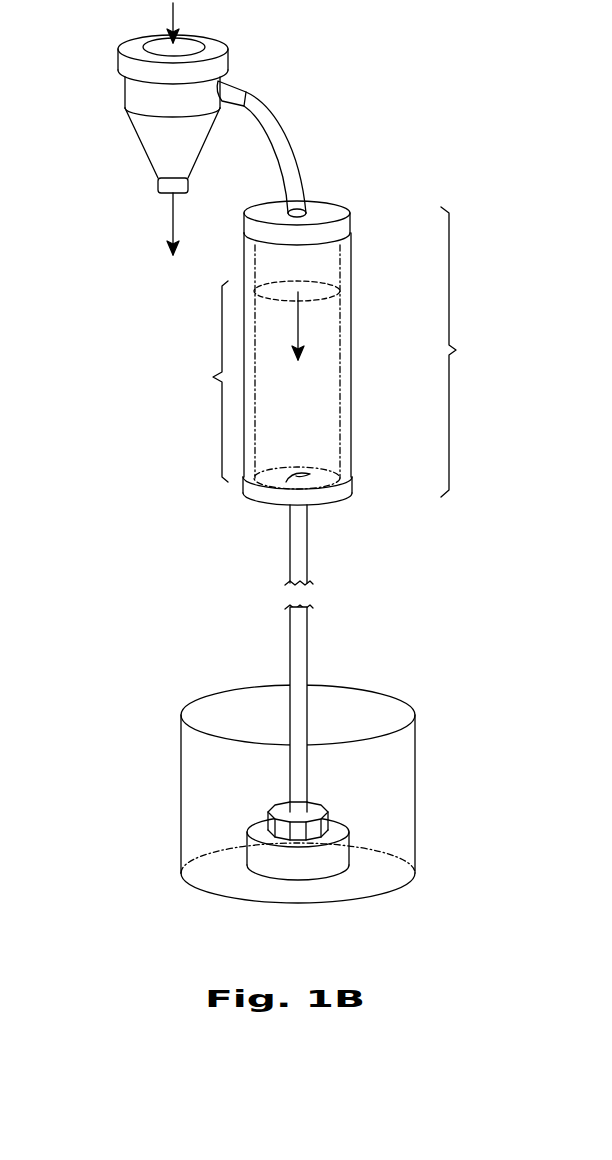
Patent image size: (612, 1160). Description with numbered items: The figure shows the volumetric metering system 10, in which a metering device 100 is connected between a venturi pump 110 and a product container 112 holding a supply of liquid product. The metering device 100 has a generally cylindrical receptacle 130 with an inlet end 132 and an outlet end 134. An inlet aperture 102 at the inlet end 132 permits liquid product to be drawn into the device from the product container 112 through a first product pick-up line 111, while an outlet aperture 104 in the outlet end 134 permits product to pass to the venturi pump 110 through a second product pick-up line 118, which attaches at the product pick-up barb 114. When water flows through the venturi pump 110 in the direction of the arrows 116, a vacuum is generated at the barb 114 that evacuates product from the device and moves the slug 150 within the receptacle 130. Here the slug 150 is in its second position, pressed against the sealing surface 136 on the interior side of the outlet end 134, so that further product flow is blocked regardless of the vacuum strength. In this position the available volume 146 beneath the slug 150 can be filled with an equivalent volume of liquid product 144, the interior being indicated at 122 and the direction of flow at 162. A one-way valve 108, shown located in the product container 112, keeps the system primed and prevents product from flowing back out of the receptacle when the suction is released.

The volumetric metering system 10 is at (408, 76).
The venturi pump 110 is at (143, 96).
The product pick-up barb 114 is at (242, 88).
The arrows indicating water flow direction 116 is at (173, 215).
The second product pick-up line 118 is at (285, 147).
The outlet aperture 104 is at (304, 207).
The outlet end 134 is at (337, 212).
The sealing surface 136 is at (323, 248).
The metering device 100 is at (464, 352).
The receptacle 130 is at (352, 420).
The available volume 146 is at (203, 381).
The slug 150 is at (330, 297).
The flow direction 162 is at (298, 317).
The liquid product 144 is at (310, 402).
The inlet aperture 102 is at (305, 472).
The inlet end 132 is at (333, 512).
The product container 112 is at (415, 772).
The first product pick-up line 111 is at (316, 641).
The container interior 122 is at (383, 797).
The one-way valve 108 is at (247, 852).